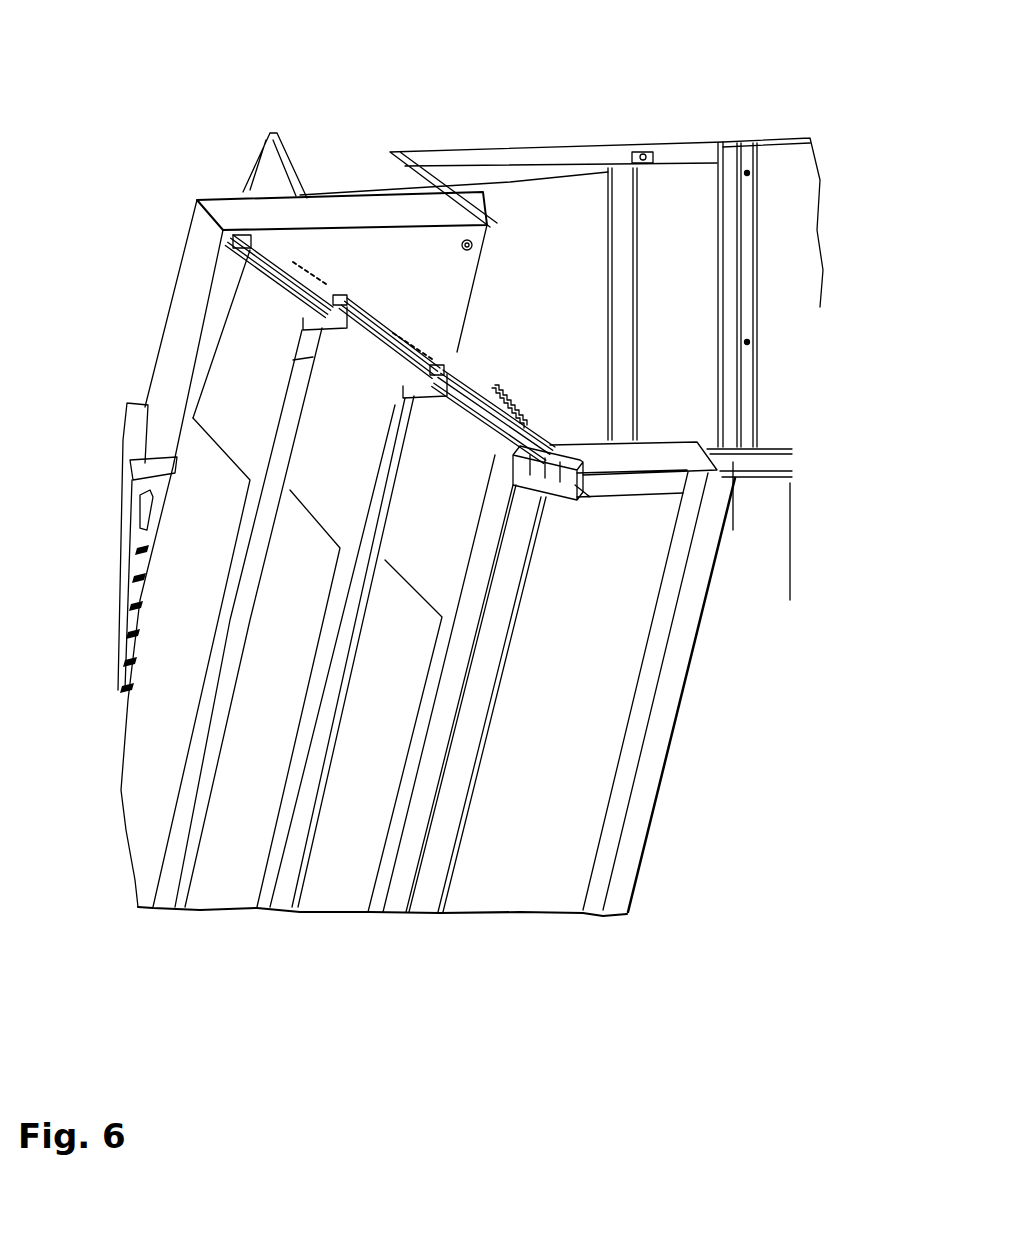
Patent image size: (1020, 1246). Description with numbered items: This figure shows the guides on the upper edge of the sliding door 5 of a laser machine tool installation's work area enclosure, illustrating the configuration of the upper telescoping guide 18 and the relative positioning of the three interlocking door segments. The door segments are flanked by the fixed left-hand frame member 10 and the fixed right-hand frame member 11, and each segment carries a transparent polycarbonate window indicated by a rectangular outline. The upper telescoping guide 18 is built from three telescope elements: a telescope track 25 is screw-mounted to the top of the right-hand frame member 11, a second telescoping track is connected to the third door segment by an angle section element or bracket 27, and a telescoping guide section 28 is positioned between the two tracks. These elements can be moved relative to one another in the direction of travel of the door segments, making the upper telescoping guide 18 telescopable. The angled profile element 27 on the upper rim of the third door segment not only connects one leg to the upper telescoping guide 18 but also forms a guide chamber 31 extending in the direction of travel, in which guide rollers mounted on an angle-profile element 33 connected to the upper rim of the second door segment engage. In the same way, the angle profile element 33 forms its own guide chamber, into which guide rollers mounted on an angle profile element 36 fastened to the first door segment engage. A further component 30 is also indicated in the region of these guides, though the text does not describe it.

The sliding door 5 is at (303, 917).
The left-hand frame member 10 is at (193, 356).
The right-hand frame member 11 is at (570, 692).
The upper telescoping guide 18 is at (565, 437).
The telescope track 25 is at (582, 498).
The angle section element 27 is at (477, 382).
The telescoping guide section 28 is at (580, 475).
The coupling block 30 is at (483, 423).
The guide chamber 31 is at (505, 403).
The angle-profile element 33 is at (390, 318).
The angle profile element 36 is at (292, 252).